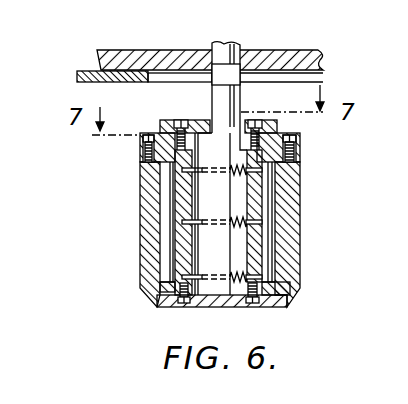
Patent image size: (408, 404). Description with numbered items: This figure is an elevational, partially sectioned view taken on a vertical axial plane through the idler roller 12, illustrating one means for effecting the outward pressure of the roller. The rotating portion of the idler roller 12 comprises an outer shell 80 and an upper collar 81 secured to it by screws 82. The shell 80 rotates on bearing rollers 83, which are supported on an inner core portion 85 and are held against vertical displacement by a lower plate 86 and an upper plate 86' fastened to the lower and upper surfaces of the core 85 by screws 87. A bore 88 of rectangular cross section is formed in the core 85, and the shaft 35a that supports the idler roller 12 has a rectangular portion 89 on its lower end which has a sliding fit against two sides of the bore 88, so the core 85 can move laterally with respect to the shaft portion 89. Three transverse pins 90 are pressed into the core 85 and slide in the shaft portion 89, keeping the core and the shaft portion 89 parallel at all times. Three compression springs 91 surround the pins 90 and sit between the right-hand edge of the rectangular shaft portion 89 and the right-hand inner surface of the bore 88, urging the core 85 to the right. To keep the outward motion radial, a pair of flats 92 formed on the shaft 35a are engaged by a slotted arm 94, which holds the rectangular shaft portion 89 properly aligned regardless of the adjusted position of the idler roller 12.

The idler roller 12 is at (116, 288).
The shaft 35a is at (240, 44).
The outer shell 80 is at (290, 232).
The upper collar 81 is at (295, 150).
The screws 82 is at (142, 158).
The bearing rollers 83 is at (272, 257).
The inner core portion 85 is at (288, 285).
The lower plate 86 is at (244, 316).
The upper plate 86' is at (300, 144).
The screws 87 is at (255, 124).
The bore 88 is at (193, 240).
The rectangular portion 89 is at (207, 197).
The transverse pins 90 is at (192, 160).
The compression springs 91 is at (248, 216).
The flats 92 is at (214, 84).
The slotted arm 94 is at (77, 77).